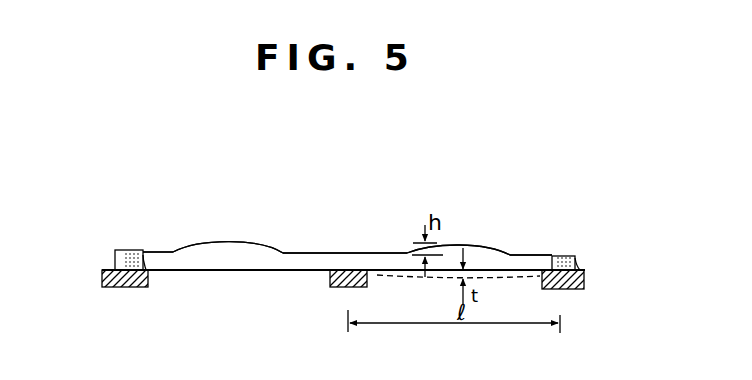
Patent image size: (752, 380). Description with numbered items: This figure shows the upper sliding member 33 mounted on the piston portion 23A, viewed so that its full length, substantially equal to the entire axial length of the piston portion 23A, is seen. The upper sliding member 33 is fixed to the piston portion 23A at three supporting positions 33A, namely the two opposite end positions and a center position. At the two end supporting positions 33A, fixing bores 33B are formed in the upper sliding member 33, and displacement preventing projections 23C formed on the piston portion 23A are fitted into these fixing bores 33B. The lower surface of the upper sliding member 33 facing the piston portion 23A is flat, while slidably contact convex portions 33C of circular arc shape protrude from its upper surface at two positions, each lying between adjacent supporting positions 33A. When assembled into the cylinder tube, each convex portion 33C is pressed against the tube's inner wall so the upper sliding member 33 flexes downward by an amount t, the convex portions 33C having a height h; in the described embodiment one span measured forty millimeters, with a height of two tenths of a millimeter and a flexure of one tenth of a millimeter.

The piston portion 23A is at (141, 288).
The displacement preventing projection 23C is at (144, 266).
The upper sliding member 33 is at (302, 236).
The supporting position 33A is at (118, 251).
The fixing bore 33B is at (130, 251).
The slidably contact convex portion 33C is at (247, 250).